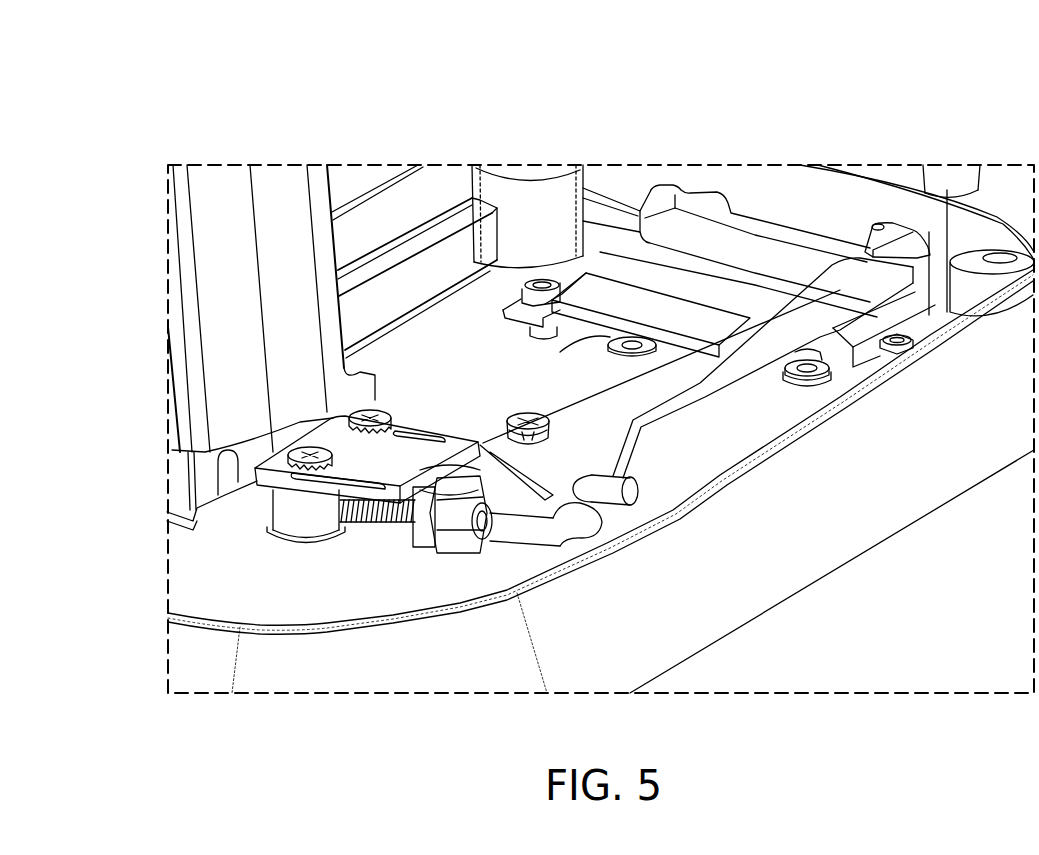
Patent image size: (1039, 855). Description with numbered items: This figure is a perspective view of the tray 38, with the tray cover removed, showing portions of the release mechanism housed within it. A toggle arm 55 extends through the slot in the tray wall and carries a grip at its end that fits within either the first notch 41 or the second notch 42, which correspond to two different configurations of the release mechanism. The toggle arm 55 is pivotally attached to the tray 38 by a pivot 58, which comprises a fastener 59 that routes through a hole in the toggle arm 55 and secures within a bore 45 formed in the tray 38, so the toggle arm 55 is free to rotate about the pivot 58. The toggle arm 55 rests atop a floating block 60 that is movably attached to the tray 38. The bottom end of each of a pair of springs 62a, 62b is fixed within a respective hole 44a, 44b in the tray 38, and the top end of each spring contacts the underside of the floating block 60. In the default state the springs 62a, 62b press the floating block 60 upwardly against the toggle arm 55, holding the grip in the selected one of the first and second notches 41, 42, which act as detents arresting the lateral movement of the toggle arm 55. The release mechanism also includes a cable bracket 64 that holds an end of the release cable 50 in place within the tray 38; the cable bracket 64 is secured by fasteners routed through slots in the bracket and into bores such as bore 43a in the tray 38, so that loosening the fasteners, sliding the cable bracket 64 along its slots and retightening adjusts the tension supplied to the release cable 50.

The tray 38 is at (830, 548).
The first notch 41 is at (872, 226).
The second notch 42 is at (690, 192).
The bore 43a is at (300, 522).
The hole 44a is at (628, 356).
The hole 44b is at (814, 383).
The bore 45 is at (512, 503).
The release cable 50 is at (617, 500).
The toggle arm 55 is at (682, 400).
The pivot 58 is at (528, 402).
The fastener 59 is at (512, 422).
The floating block 60 is at (641, 297).
The spring 62a is at (525, 285).
The spring 62b is at (797, 360).
The cable bracket 64 is at (400, 463).